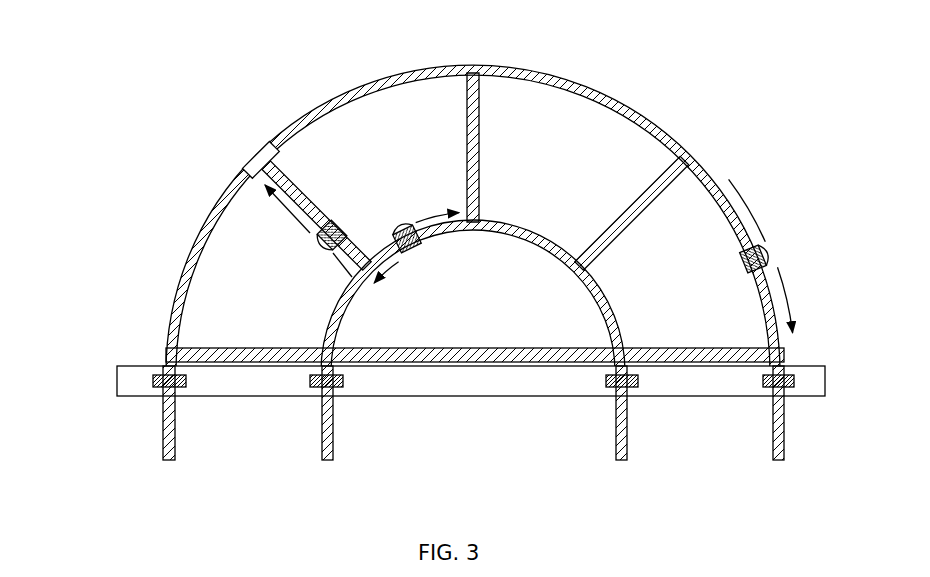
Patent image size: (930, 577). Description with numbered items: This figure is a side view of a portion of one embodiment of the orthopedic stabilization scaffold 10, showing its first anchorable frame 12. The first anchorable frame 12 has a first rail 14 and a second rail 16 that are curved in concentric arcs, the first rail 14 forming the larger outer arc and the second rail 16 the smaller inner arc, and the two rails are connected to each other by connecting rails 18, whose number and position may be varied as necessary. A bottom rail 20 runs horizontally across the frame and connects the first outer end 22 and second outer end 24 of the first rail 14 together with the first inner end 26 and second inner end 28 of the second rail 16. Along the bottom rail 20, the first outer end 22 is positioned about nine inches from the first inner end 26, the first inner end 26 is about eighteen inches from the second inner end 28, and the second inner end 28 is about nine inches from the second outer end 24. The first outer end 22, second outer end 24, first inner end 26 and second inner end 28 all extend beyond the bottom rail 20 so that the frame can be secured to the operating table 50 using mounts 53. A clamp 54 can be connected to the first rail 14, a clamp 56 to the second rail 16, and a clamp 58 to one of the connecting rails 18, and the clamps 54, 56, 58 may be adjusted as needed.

The orthopedic stabilization scaffold 10 is at (448, 256).
The first anchorable frame 12 is at (484, 197).
The first rail 14 is at (588, 72).
The second rail 16 is at (534, 226).
The connecting rails 18 is at (300, 186).
The bottom rail 20 is at (467, 383).
The first outer end 22 is at (142, 420).
The second outer end 24 is at (773, 436).
The first inner end 26 is at (320, 436).
The second inner end 28 is at (616, 436).
The operating table 50 is at (411, 385).
The mounts 53 is at (186, 384).
The clamp 54 is at (775, 247).
The clamp 56 is at (420, 250).
The clamp 58 is at (318, 247).